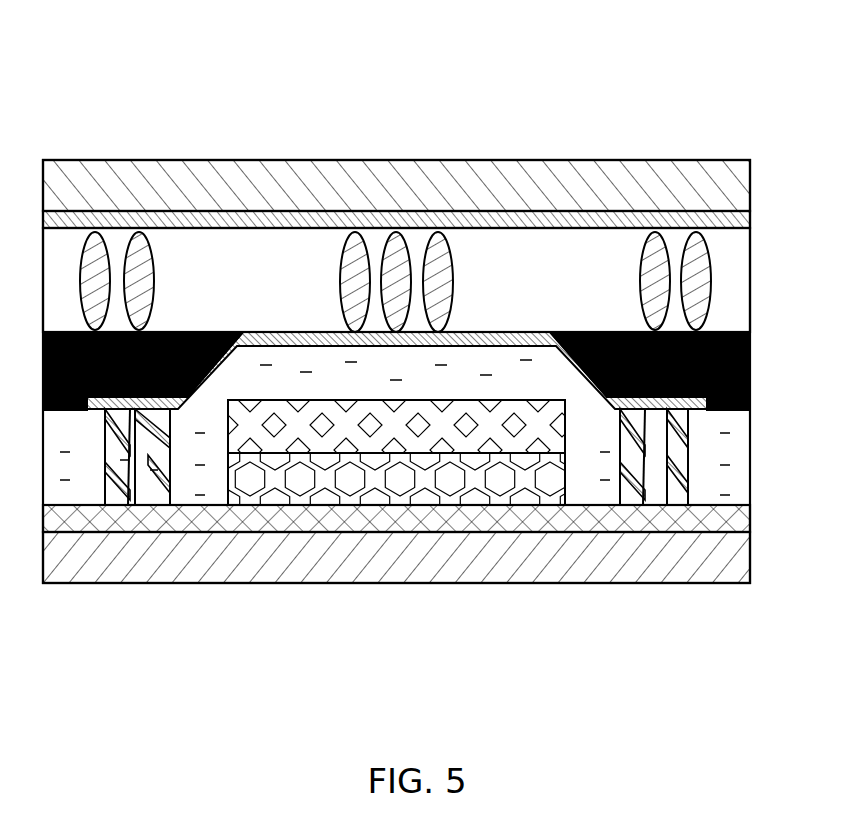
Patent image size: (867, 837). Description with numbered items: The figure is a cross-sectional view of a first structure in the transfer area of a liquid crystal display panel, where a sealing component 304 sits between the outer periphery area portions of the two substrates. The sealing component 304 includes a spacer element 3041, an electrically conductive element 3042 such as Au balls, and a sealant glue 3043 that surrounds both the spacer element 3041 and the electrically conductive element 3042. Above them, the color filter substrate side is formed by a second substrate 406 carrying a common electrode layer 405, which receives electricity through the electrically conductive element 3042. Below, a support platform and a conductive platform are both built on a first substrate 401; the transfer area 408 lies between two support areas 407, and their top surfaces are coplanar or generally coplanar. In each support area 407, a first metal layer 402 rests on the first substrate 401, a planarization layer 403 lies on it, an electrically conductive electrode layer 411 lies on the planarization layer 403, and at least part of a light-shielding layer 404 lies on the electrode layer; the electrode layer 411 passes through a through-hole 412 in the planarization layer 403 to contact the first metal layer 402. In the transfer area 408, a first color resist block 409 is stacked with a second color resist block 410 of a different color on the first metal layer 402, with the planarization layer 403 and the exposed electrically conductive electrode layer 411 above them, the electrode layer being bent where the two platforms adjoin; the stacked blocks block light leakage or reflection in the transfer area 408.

The sealing component 304 is at (412, 175).
The spacer element 3041 is at (88, 250).
The electrically conductive element 3042 is at (343, 260).
The sealant glue 3043 is at (233, 247).
The first substrate 401 is at (750, 578).
The first metal layer 402 is at (750, 515).
The planarization layer 403 is at (750, 467).
The light-shielding layer 404 is at (750, 370).
The common electrode layer 405 is at (750, 222).
The second substrate 406 is at (750, 185).
The support area 407 is at (43, 608).
The transfer area 408 is at (396, 551).
The first color resist block 409 is at (545, 649).
The second color resist block 410 is at (333, 450).
The electrically conductive electrode layer 411 is at (510, 345).
The through-hole 412 is at (693, 420).